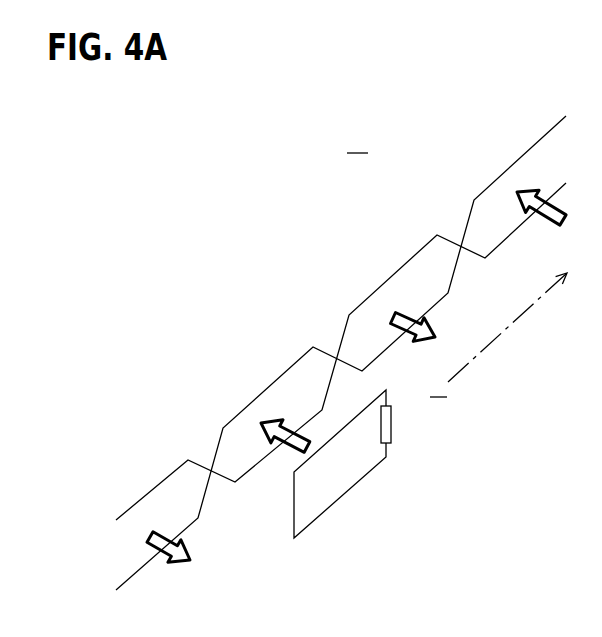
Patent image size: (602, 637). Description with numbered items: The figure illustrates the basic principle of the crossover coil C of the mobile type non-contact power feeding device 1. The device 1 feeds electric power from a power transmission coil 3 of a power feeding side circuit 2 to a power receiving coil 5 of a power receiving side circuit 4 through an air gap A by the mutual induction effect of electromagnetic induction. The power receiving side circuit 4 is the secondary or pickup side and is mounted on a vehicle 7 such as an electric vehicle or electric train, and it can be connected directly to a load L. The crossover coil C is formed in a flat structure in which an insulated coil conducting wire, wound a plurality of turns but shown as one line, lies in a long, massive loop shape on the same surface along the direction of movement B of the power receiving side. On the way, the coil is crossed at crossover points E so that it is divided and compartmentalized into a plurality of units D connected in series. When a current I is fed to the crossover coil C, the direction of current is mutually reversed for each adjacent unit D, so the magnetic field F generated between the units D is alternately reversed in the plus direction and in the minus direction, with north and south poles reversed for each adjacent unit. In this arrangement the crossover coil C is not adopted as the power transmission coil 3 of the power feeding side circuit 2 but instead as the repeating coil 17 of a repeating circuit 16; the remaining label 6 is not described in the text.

The mobile type non-contact power feeding device 1 is at (462, 569).
The power feeding side circuit 2 is at (341, 349).
The repeating circuit 16 is at (341, 349).
The crossover coil C is at (242, 238).
The power transmission coil 3 is at (341, 348).
The repeating coil 17 is at (341, 348).
The power receiving coil 5 is at (375, 465).
The power receiving side circuit 4 is at (400, 487).
The first region 6 is at (357, 140).
The vehicle 7 is at (438, 385).
The load L is at (392, 421).
The air gap A is at (352, 402).
The direction of movement B is at (507, 327).
The unit D is at (169, 467).
The crossover point E is at (213, 469).
The current I is at (145, 485).
The magnetic field F is at (374, 389).